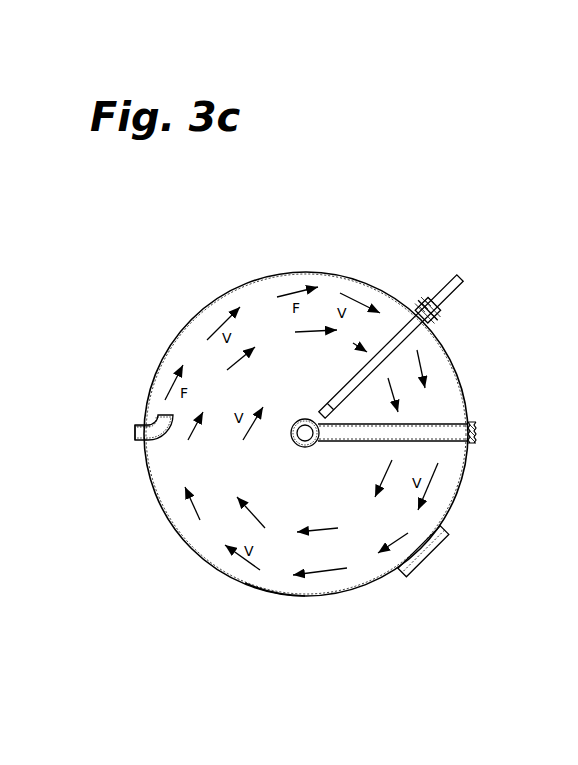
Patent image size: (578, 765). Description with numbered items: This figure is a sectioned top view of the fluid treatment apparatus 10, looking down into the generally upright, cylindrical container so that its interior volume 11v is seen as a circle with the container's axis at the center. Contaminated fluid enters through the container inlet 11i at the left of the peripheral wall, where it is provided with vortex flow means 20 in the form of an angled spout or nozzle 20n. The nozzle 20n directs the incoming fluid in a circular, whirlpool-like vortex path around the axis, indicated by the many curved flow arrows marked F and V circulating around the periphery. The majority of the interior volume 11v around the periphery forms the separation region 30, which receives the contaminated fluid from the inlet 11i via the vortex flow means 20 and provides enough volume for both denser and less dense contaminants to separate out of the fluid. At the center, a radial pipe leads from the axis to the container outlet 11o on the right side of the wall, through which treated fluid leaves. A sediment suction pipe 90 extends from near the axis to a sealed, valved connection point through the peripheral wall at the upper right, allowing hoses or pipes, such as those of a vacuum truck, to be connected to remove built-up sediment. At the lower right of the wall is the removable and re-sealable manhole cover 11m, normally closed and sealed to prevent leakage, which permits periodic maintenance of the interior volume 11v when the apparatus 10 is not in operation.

The fluid treatment apparatus 10 is at (353, 174).
The sediment suction pipe 90 is at (421, 278).
The vortex flow means 20 is at (117, 395).
The angled spout or nozzle 20n is at (138, 407).
The container inlet 11i is at (125, 433).
The container outlet 11o is at (482, 434).
The manhole cover 11m is at (449, 556).
The interior volume 11v is at (274, 624).
The separation region 30 is at (275, 573).